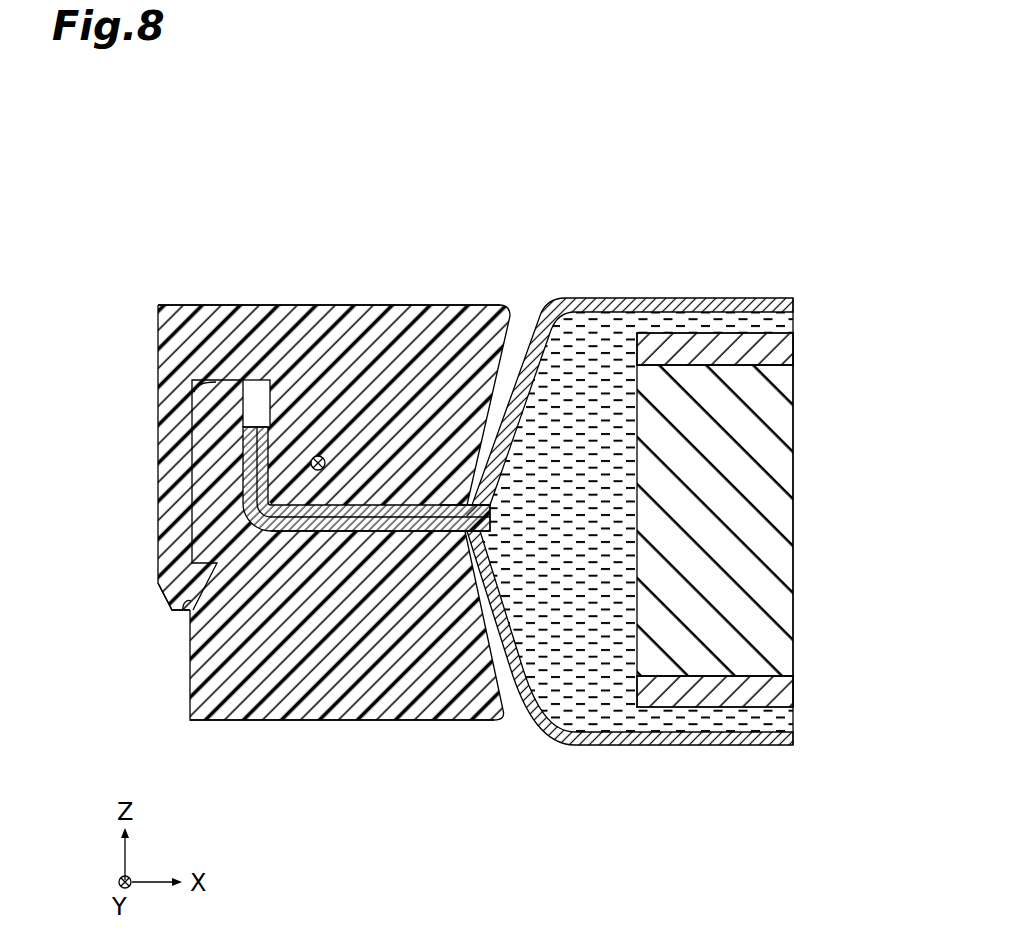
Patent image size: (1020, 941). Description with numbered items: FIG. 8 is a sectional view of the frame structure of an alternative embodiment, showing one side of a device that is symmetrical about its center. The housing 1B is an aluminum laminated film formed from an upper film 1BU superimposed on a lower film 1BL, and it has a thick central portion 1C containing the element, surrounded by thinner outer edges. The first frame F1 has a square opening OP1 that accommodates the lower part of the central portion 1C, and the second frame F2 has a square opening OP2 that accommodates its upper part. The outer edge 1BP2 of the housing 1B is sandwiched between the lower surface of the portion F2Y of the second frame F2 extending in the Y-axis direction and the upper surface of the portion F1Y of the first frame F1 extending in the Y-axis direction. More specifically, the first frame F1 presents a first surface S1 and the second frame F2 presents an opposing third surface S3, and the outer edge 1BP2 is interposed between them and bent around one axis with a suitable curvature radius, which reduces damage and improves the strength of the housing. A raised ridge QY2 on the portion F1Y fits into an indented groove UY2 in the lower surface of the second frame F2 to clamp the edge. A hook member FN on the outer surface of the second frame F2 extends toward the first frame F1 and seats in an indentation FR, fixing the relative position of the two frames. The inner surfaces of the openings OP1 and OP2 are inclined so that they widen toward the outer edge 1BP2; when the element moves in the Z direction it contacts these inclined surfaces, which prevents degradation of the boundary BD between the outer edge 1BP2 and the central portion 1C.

The second frame F2 is at (378, 304).
The portion of second frame extending in the Y-axis direction F2Y is at (333, 317).
The first frame F1 is at (328, 723).
The portion of first frame extending in the Y-axis direction F1Y is at (283, 706).
The outer edge of housing 1BP2 is at (356, 538).
The raised ridge QY2 is at (205, 450).
The indented groove UY2 is at (205, 385).
The first surface S1 is at (302, 533).
The third surface S3 is at (383, 506).
The boundary BD is at (456, 537).
The hook member FN is at (185, 578).
The indentation FR is at (189, 604).
The second opening OP2 is at (499, 363).
The first opening OP1 is at (500, 683).
The housing 1B is at (654, 297).
The central portion 1C is at (657, 747).
The upper film 1BU is at (722, 298).
The lower film 1BL is at (724, 742).